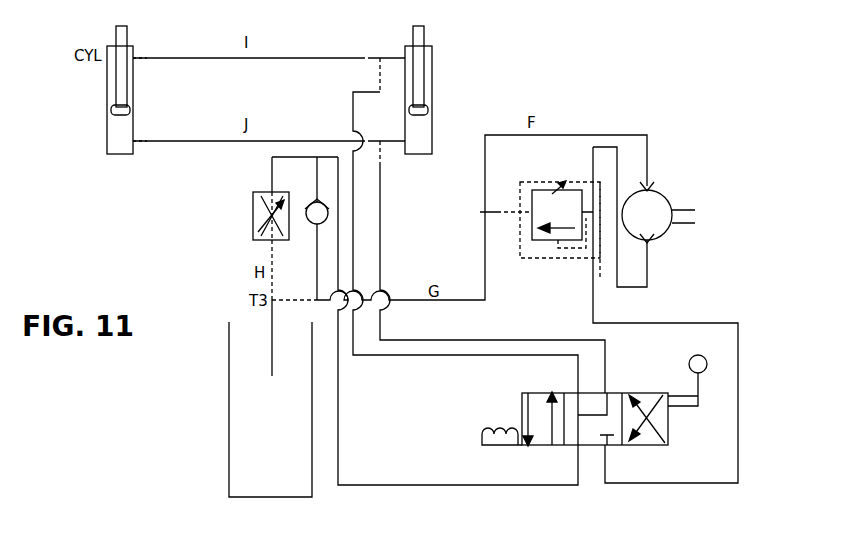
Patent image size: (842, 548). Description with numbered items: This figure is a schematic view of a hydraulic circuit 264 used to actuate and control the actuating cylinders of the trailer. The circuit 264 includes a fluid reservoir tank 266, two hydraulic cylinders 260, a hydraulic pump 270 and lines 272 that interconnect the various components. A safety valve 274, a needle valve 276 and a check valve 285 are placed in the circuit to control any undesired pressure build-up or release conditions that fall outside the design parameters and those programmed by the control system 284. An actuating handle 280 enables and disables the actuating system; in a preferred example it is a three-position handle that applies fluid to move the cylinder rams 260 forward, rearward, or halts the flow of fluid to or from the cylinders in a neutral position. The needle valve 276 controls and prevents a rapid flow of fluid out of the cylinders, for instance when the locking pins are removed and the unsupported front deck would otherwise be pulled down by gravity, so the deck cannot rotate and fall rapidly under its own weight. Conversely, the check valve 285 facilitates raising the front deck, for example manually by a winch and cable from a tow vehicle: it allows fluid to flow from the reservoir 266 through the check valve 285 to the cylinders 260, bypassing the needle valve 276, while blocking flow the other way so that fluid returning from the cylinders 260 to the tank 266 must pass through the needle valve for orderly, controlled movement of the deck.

The hydraulic cylinder 260 is at (432, 82).
The hydraulic circuit 264 is at (569, 64).
The fluid reservoir tank 266 is at (243, 412).
The hydraulic pump 270 is at (663, 192).
The lines 272 is at (609, 282).
The safety valve 274 is at (535, 247).
The needle valve 276 is at (252, 200).
The actuating handle 280 is at (690, 408).
The control system 284 is at (612, 385).
The check valve 285 is at (327, 228).